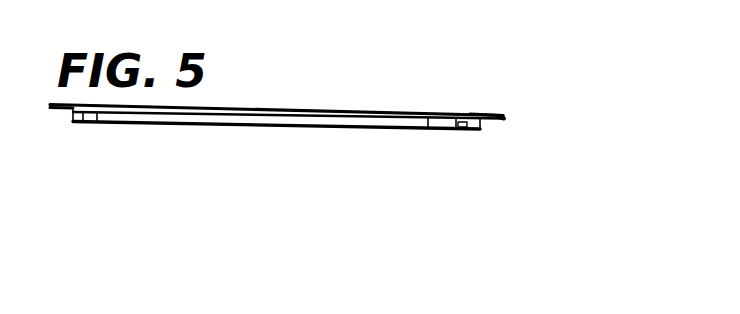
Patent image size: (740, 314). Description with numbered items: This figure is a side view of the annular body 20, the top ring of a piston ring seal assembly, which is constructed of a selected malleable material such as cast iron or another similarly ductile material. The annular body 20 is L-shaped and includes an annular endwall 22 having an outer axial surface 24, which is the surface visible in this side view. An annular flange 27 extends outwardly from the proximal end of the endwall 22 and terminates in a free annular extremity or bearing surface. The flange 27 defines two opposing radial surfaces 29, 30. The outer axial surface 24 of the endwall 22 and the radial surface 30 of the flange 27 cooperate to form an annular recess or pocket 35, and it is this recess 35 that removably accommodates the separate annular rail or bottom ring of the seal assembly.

The annular body 20 is at (295, 140).
The annular endwall 22 is at (469, 130).
The outer axial surface 24 is at (171, 123).
The annular flange 27 is at (332, 112).
The radial surface 29 is at (476, 114).
The radial surface 30 is at (484, 122).
The annular recess 35 is at (75, 112).